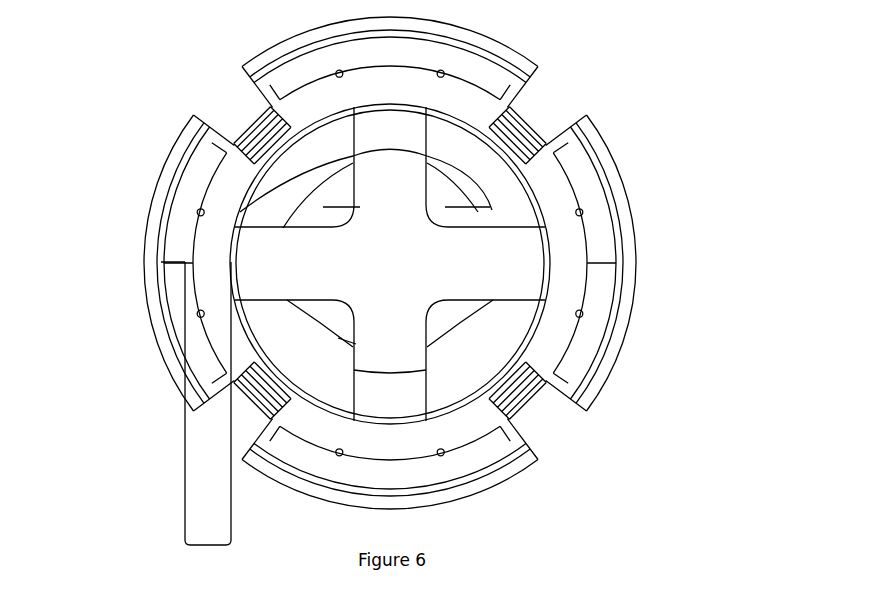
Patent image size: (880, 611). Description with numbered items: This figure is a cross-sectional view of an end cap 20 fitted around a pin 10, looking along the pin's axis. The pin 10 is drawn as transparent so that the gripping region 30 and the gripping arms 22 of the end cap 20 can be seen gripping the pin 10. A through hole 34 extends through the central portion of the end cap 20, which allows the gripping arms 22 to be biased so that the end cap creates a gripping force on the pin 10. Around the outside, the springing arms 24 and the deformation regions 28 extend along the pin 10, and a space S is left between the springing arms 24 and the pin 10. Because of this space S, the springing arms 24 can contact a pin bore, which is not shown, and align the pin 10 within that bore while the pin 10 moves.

The pin 10 is at (122, 150).
The end cap 20 is at (668, 92).
The gripping arms 22 is at (377, 353).
The springing arms 24 is at (537, 420).
The deformation regions 28 is at (553, 118).
The gripping region 30 is at (452, 297).
The through hole 34 is at (366, 261).
The space S is at (212, 548).